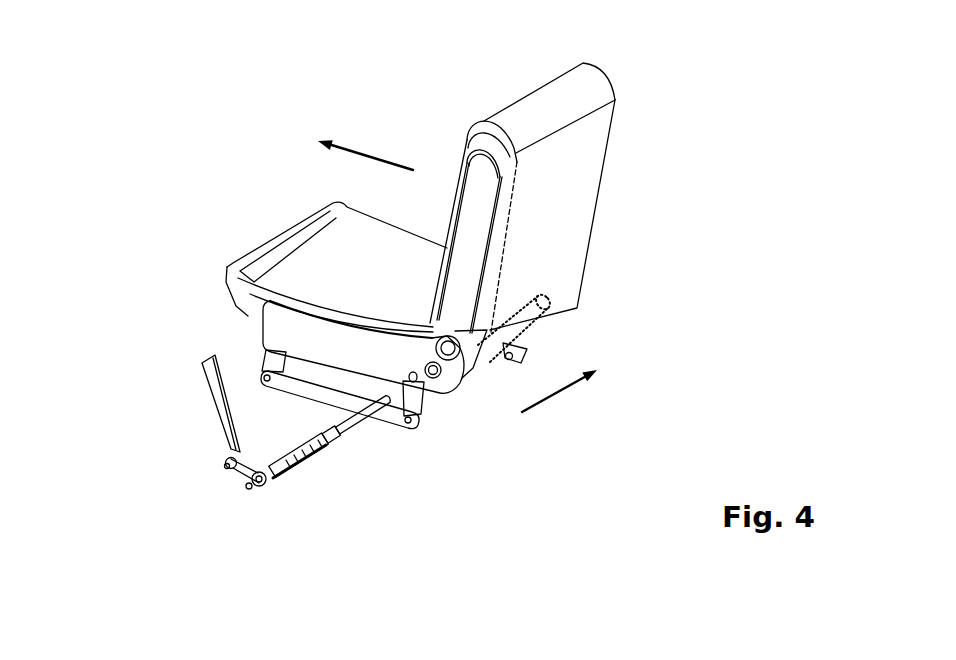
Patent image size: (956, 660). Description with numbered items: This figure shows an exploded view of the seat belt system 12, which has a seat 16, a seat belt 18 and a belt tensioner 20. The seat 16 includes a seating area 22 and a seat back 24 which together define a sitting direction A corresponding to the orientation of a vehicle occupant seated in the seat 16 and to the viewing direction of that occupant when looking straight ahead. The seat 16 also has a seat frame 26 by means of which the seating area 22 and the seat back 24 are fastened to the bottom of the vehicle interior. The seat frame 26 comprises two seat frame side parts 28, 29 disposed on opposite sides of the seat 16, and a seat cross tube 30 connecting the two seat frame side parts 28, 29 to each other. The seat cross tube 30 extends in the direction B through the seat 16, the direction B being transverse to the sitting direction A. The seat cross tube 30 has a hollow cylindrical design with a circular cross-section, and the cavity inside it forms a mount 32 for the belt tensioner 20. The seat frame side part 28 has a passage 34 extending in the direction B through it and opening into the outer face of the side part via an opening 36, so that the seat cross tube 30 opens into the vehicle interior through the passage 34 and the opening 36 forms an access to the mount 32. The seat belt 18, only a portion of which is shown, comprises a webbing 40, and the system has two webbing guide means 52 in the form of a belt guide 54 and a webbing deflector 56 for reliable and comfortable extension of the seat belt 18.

The seat belt system 12 is at (282, 140).
The seat 16 is at (628, 98).
The seat belt 18 is at (183, 372).
The belt tensioner 20 is at (328, 462).
The seating area 22 is at (293, 272).
The seat back 24 is at (522, 122).
The seat frame 26 is at (252, 343).
The seat frame side part 28 is at (272, 327).
The seat frame side part 29 is at (600, 289).
The seat cross tube 30 is at (530, 318).
The mount 32 is at (491, 346).
The passage 34 is at (447, 427).
The opening 36 is at (430, 380).
The webbing 40 is at (223, 424).
The webbing guide means 52 is at (177, 489).
The belt guide 54 is at (263, 488).
The webbing deflector 56 is at (227, 466).
The sitting direction A is at (375, 155).
The direction B is at (548, 400).